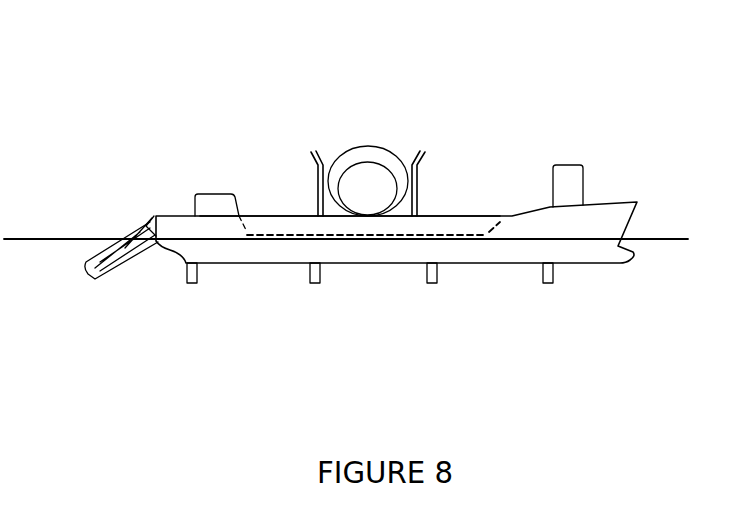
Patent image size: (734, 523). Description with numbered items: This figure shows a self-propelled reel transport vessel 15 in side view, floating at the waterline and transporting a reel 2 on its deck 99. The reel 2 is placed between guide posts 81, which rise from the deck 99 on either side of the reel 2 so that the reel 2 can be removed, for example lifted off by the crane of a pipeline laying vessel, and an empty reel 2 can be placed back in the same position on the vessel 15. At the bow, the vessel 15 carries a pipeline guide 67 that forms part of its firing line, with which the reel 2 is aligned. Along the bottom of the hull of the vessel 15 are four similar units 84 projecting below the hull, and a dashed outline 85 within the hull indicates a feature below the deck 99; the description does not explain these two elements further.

The vessel 15 is at (626, 162).
The reel 2 is at (388, 147).
The guide posts 81 is at (313, 140).
The deck 99 is at (267, 210).
The hold compartment 85 is at (440, 225).
The thrusters 84 is at (190, 287).
The pipeline guide 67 is at (123, 236).